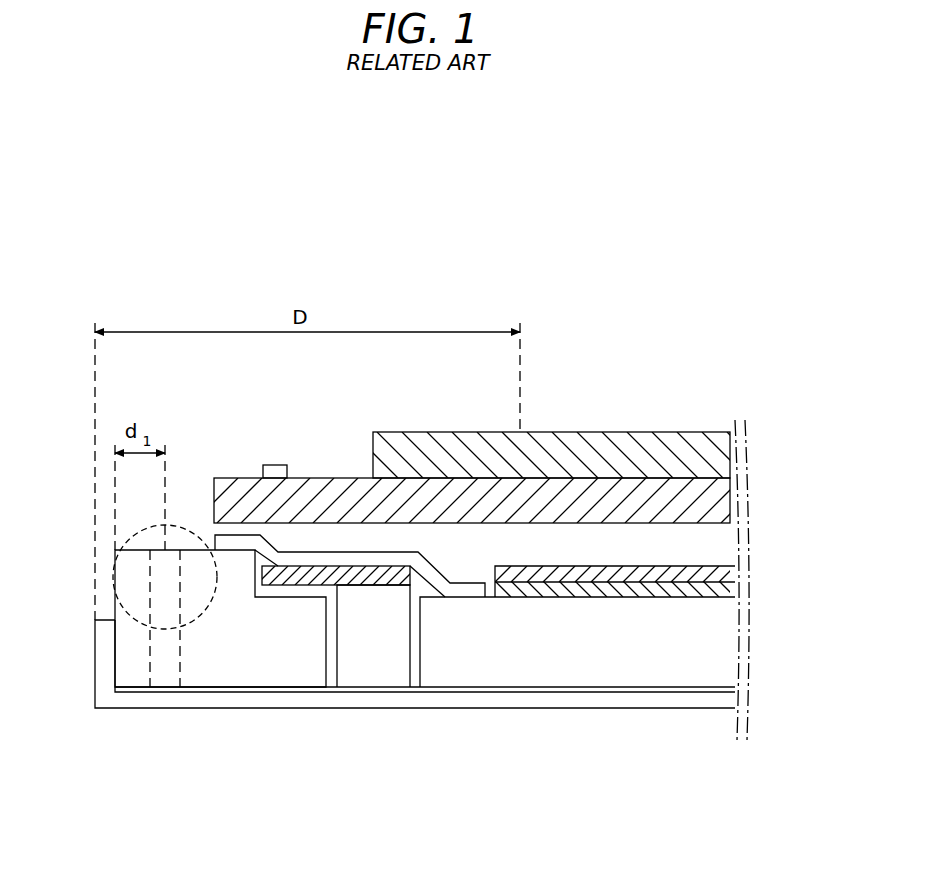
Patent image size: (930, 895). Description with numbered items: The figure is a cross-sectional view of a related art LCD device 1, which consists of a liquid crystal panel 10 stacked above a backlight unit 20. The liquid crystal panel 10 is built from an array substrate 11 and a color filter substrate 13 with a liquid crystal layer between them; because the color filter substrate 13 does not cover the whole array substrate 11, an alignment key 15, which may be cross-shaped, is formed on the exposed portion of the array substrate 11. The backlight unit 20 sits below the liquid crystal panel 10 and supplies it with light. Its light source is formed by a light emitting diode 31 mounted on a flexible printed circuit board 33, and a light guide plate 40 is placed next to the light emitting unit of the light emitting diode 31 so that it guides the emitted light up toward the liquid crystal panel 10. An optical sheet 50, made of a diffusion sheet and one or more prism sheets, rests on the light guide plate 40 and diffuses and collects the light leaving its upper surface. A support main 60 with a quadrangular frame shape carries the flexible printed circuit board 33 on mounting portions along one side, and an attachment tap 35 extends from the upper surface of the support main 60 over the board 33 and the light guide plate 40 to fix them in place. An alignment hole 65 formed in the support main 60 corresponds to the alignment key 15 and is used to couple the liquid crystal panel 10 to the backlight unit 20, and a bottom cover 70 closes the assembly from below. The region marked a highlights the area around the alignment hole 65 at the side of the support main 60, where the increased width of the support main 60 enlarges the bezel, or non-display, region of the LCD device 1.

The related art LCD device 1 is at (766, 287).
The liquid crystal panel 10 is at (702, 333).
The array substrate 11 is at (678, 492).
The color filter substrate 13 is at (607, 433).
The alignment key 15 is at (272, 465).
The backlight unit 20 is at (763, 522).
The light emitting diode 31 is at (370, 660).
The flexible printed circuit board 33 is at (302, 577).
The attachment tap 35 is at (432, 592).
The light guide plate 40 is at (520, 660).
The optical sheet 50 is at (643, 600).
The support main 60 is at (257, 665).
The alignment hole 65 is at (162, 665).
The bottom cover 70 is at (113, 703).
The region a is at (123, 549).